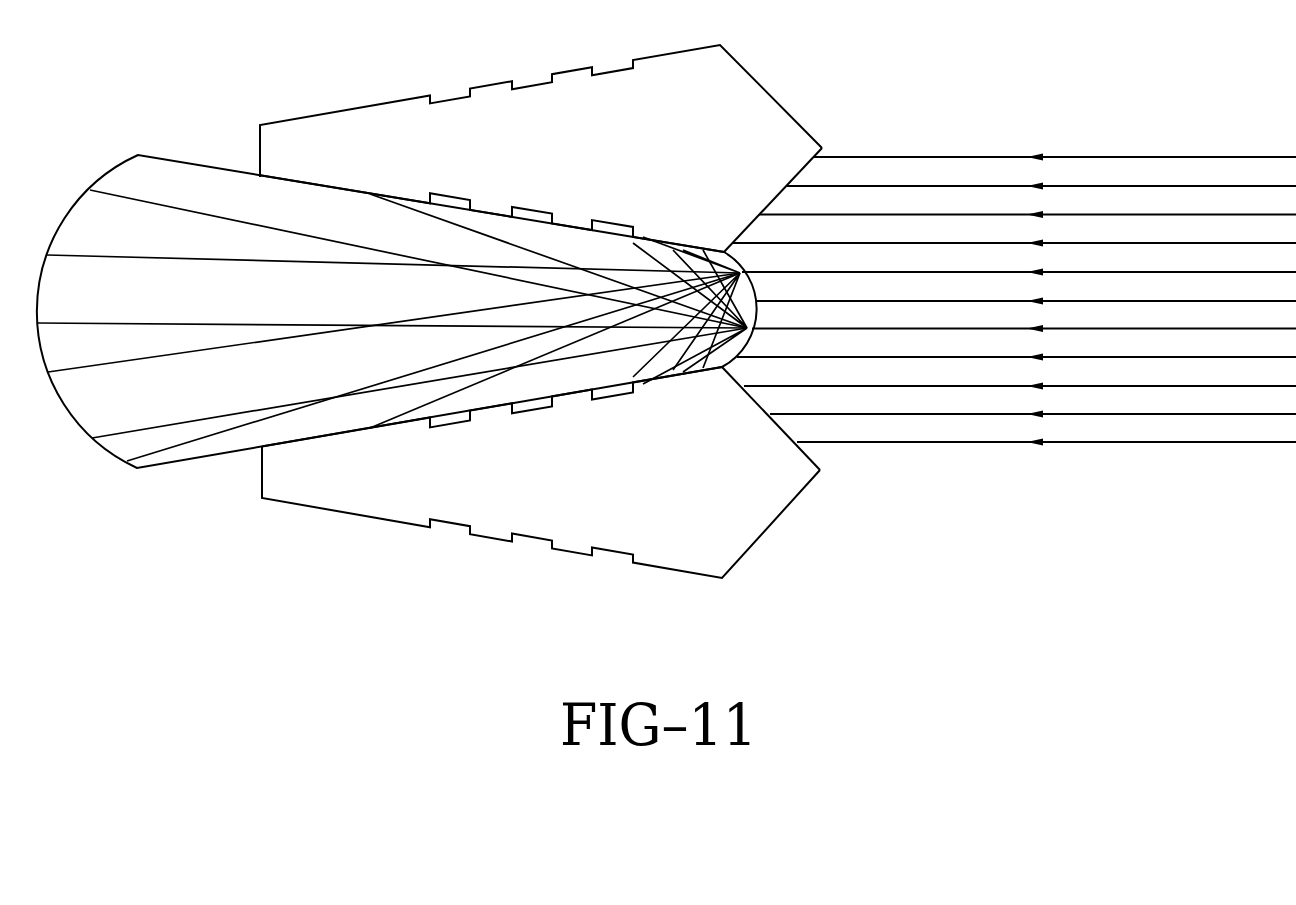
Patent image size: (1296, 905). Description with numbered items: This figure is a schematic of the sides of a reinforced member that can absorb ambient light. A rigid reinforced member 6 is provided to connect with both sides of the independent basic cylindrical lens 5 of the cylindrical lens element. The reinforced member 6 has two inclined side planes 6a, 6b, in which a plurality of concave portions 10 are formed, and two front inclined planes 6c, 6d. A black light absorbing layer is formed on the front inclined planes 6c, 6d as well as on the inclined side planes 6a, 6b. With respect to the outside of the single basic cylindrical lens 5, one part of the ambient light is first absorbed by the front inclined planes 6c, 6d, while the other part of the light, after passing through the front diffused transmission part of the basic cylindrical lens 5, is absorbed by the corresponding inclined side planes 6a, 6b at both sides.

The basic cylindrical lens 5 is at (173, 465).
The rigid reinforced member 6 is at (778, 483).
The inclined side plane 6a is at (320, 187).
The inclined side plane 6b is at (355, 433).
The front inclined plane 6c is at (820, 466).
The front inclined plane 6d is at (822, 148).
The concave portions 10 is at (618, 552).